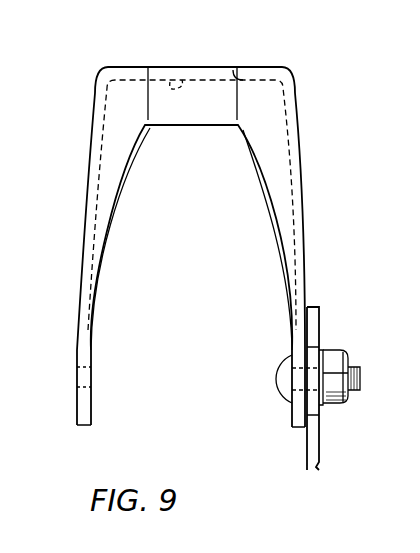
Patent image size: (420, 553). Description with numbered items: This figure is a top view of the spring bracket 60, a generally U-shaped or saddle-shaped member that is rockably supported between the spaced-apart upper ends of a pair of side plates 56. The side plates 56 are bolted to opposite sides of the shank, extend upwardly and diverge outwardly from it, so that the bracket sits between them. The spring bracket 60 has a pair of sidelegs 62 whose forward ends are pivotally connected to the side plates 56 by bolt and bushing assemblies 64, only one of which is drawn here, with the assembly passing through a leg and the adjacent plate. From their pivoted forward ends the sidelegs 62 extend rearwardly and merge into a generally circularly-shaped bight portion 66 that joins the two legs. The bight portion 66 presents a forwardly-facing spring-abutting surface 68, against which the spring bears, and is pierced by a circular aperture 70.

The side plate 56 is at (320, 322).
The spring bracket 60 is at (307, 158).
The sideleg 62 is at (77, 353).
The bolt and bushing assembly 64 is at (286, 372).
The bight portion 66 is at (133, 67).
The spring-abutting surface 68 is at (170, 82).
The circular aperture 70 is at (233, 70).